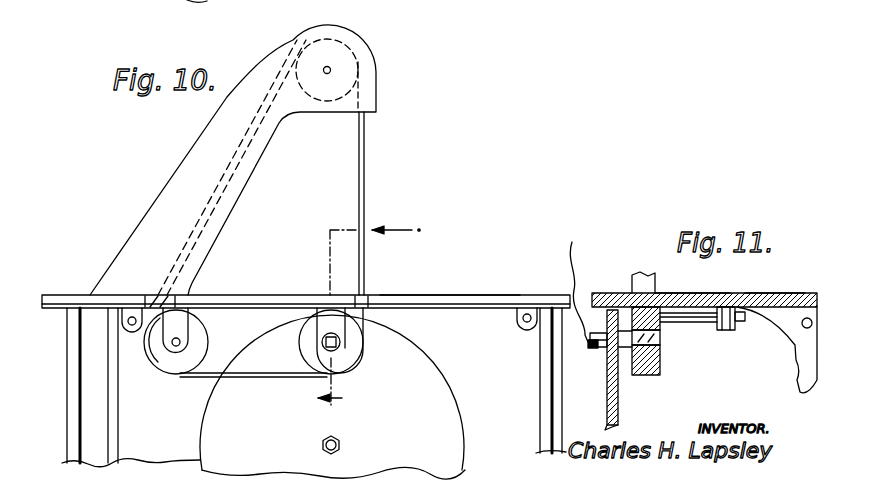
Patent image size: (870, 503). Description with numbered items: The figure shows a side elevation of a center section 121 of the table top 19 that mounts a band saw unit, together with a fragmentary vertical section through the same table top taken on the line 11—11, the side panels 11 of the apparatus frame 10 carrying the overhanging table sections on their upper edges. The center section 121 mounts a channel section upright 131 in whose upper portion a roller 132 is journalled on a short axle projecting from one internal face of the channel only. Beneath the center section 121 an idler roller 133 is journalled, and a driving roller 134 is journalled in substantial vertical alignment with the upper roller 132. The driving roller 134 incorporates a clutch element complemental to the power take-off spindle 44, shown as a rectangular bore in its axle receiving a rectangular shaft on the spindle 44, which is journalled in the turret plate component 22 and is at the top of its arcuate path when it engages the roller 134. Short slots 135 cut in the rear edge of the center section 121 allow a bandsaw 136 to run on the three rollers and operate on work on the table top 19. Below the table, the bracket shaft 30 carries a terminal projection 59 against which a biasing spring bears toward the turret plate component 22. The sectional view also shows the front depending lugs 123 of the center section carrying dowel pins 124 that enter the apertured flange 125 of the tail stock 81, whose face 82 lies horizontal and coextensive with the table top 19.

In FIG. 10, the frame 10 is at (295, 387).
In FIG. 10, the side panel 11 is at (368, 317).
In FIG. 10, the table top 19 is at (306, 279).
In FIG. 11, the table top 19 is at (695, 283).
In FIG. 10, the turret plate component 22 is at (348, 397).
In FIG. 11, the turret plate component 22 is at (602, 370).
In FIG. 10, the bracket shaft 30 is at (304, 448).
In FIG. 10, the spindle 44 is at (388, 336).
In FIG. 11, the spindle 44 is at (568, 281).
In FIG. 10, the terminal projection 59 is at (356, 439).
In FIG. 11, the tail stock 81 is at (770, 277).
In FIG. 11, the face 82 is at (777, 326).
In FIG. 10, the center section 121 is at (450, 281).
In FIG. 11, the center section 121 is at (692, 280).
In FIG. 10, the front depending lugs 123 is at (511, 333).
In FIG. 11, the front depending lugs 123 is at (710, 338).
In FIG. 11, the dowel pins 124 is at (767, 328).
In FIG. 11, the flange 125 is at (761, 342).
In FIG. 10, the channel section upright 131 is at (233, 160).
In FIG. 10, the roller 132 is at (299, 165).
In FIG. 10, the idler roller 133 is at (165, 356).
In FIG. 10, the driving roller 134 is at (340, 353).
In FIG. 10, the slots 135 is at (240, 269).
In FIG. 11, the slots 135 is at (636, 294).
In FIG. 10, the bandsaw 136 is at (389, 203).